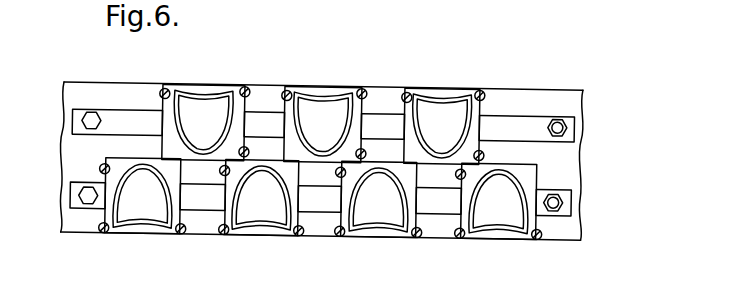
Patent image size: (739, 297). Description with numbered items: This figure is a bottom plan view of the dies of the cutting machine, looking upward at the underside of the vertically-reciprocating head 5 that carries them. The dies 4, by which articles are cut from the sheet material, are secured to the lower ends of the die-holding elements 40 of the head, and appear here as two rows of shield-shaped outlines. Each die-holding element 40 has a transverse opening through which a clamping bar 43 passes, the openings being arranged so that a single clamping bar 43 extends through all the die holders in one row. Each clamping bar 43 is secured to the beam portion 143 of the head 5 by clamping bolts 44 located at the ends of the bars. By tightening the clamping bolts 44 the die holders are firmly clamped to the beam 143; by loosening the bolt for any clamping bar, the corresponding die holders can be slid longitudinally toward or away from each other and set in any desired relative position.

The die 4 is at (203, 93).
The vertically-reciprocating head 5 is at (583, 82).
The die-holding element 40 is at (178, 81).
The clamping bar 43 is at (515, 113).
The clamping bolt 44 is at (87, 111).
The beam portion 143 is at (573, 226).